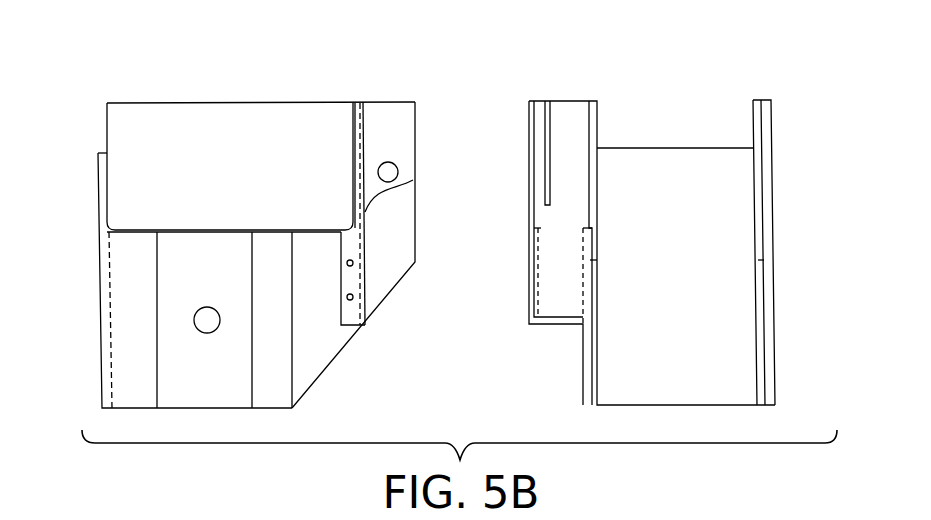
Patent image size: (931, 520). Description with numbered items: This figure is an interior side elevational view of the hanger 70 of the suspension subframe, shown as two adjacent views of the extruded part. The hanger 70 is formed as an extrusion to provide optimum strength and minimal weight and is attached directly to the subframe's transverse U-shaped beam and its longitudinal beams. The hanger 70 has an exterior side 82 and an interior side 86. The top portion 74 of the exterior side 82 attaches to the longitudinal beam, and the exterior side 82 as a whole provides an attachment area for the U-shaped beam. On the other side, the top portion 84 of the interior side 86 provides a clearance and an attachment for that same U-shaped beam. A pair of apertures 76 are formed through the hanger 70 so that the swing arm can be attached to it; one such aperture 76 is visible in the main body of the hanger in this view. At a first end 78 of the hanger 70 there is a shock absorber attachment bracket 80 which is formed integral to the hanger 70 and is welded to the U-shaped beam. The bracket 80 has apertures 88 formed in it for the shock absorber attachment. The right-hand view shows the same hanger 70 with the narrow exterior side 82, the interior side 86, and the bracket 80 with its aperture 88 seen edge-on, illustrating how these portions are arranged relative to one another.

The hanger 70 is at (126, 70).
The top portion of the exterior side 74 is at (283, 102).
The aperture 76 is at (196, 310).
The first end 78 is at (414, 233).
The shock absorber attachment bracket 80 is at (397, 147).
The exterior side 82 is at (215, 122).
The top portion of the interior side 84 is at (211, 230).
The interior side 86 is at (315, 297).
The apertures 88 is at (398, 177).